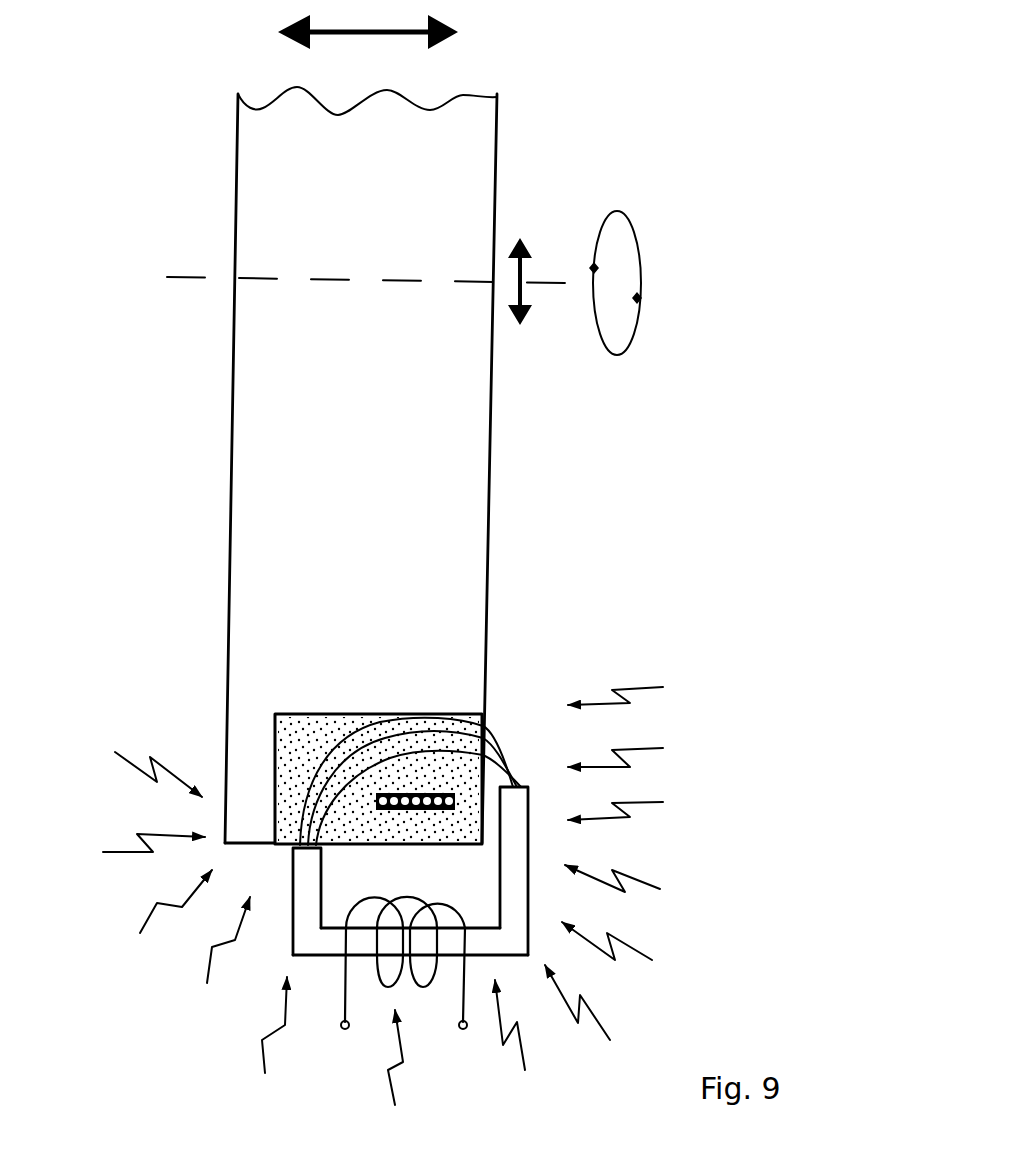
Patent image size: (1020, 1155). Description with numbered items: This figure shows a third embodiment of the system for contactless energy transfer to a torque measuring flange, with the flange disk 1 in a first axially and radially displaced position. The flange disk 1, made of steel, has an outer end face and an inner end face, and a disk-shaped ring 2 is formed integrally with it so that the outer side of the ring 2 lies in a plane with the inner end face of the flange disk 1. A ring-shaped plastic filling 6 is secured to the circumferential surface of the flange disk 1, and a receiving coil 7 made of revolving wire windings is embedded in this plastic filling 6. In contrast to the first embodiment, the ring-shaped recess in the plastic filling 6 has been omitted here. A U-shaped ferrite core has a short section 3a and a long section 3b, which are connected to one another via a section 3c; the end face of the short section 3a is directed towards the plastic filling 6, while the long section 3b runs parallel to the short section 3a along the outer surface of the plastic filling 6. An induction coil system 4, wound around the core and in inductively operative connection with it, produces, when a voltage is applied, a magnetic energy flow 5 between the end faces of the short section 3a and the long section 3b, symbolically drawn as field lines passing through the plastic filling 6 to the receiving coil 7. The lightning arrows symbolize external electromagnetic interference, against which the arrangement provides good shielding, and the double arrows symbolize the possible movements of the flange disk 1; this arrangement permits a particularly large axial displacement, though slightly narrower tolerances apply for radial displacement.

The flange disk 1 is at (467, 548).
The disk-shaped ring 2 is at (250, 782).
The short section 3a is at (303, 873).
The long section 3b is at (520, 840).
The section 3c is at (328, 943).
The induction coil system 4 is at (462, 975).
The magnetic energy flow 5 is at (502, 745).
The ring-shaped plastic filling 6 is at (305, 735).
The receiving coil 7 is at (427, 790).